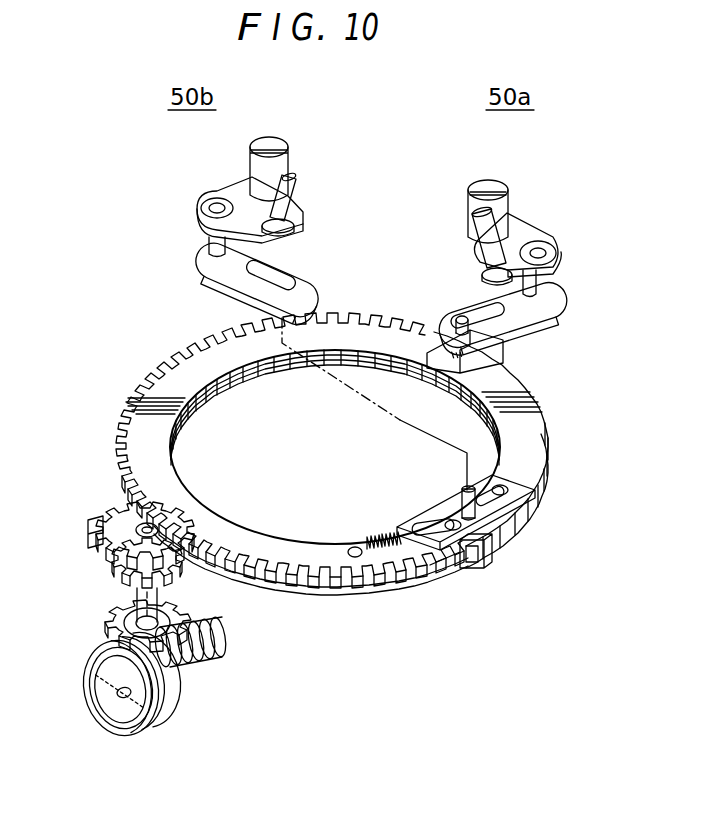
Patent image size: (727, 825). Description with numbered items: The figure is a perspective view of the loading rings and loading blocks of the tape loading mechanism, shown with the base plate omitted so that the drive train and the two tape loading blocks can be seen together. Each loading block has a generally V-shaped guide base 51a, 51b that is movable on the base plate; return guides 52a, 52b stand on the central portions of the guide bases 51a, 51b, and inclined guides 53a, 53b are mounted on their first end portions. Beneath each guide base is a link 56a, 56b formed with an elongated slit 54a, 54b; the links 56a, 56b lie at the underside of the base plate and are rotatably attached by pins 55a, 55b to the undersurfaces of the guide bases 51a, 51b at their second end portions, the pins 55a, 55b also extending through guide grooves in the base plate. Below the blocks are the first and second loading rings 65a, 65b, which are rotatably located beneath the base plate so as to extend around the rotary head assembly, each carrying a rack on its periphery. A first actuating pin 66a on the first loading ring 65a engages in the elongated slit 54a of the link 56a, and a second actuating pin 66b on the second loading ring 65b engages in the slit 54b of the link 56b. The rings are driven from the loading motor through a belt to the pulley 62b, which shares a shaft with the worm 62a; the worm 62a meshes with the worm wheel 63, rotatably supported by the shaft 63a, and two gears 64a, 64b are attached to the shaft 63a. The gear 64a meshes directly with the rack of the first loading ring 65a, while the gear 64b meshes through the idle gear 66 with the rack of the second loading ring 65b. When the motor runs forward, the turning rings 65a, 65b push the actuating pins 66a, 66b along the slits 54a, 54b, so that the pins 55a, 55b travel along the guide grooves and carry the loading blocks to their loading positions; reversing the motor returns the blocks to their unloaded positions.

The guide base 51a is at (523, 230).
The guide base 51b is at (237, 190).
The return guide 52a is at (497, 187).
The return guide 52b is at (293, 143).
The inclined guide 53a is at (480, 225).
The inclined guide 53b is at (297, 187).
The elongated slit 54a is at (477, 317).
The elongated slit 54b is at (273, 272).
The pin 55a is at (540, 287).
The pin 55b is at (208, 247).
The link 56a is at (537, 310).
The link 56b is at (237, 263).
The worm 62a is at (208, 660).
The pulley 62b is at (143, 735).
The worm wheel 63 is at (183, 613).
The shaft 63a is at (112, 618).
The gear 64a is at (165, 526).
The gear 64b is at (132, 585).
The first loading ring 65a is at (545, 438).
The second loading ring 65b is at (430, 588).
The idle gear 66 is at (103, 523).
The first actuating pin 66a is at (460, 322).
The second actuating pin 66b is at (462, 500).